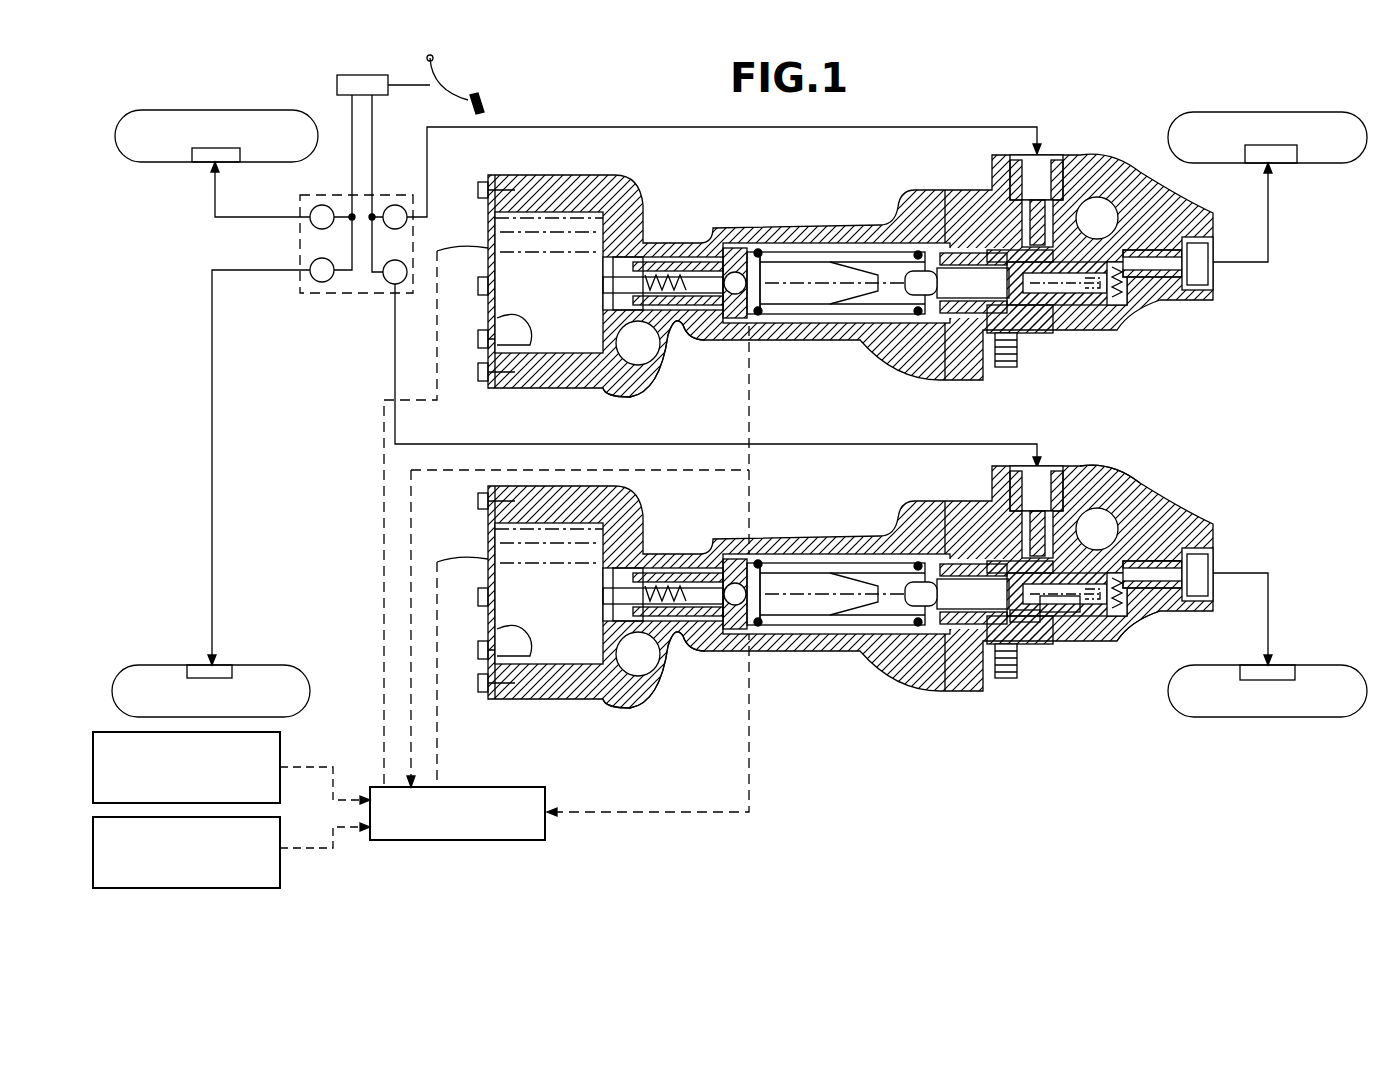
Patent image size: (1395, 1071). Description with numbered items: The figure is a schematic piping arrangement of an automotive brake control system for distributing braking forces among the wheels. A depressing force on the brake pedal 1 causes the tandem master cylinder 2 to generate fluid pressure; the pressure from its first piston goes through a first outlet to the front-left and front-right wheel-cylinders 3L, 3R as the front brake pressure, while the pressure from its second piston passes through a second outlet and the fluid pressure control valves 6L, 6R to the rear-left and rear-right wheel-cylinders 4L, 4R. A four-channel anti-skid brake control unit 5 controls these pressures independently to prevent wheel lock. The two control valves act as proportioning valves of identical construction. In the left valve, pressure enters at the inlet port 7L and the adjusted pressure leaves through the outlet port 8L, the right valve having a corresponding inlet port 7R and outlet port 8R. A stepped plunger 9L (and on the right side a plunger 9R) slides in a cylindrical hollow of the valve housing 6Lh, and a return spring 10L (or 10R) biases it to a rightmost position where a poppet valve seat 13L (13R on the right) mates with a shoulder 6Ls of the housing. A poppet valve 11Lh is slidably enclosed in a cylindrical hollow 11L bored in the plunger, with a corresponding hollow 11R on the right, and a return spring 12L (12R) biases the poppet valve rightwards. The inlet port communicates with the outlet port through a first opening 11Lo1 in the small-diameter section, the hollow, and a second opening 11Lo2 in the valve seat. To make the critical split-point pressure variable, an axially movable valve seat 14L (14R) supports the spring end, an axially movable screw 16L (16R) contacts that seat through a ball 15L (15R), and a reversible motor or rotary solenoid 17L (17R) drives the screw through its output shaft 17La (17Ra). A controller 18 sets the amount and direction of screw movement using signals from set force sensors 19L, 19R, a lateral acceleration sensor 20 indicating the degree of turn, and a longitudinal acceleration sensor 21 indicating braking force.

The brake pedal 1 is at (484, 103).
The tandem master cylinder 2 is at (338, 82).
The front-right wheel-cylinder 3R is at (203, 155).
The front-left wheel-cylinder 3L is at (222, 665).
The rear-right wheel-cylinder 4R is at (1285, 157).
The rear-left wheel-cylinder 4L is at (1275, 683).
The 4-channel anti-skid brake control unit 5 is at (352, 300).
The fluid pressure control valve 6R is at (1118, 160).
The fluid pressure control valve 6L is at (1130, 482).
The valve housing 6Lh is at (1135, 520).
The shoulder 6Ls is at (1135, 645).
The inlet port 7R is at (1040, 162).
The inlet port 7L is at (1040, 488).
The outlet port 8R is at (1200, 283).
The outlet port 8L is at (1190, 592).
The stepped plunger 9R is at (930, 300).
The stepped plunger 9L is at (932, 611).
The return spring 10R is at (850, 318).
The return spring 10L is at (845, 629).
The cylindrical hollow 11R is at (1103, 307).
The cylindrical hollow 11L is at (1100, 618).
The poppet valve 11Lh is at (1078, 625).
The first opening 11Lo1 is at (1030, 640).
The second opening 11Lo2 is at (1165, 563).
The return spring 12R is at (1042, 333).
The return spring 12L is at (1042, 645).
The poppet valve seat 13R is at (1127, 305).
The poppet valve seat 13L is at (1120, 620).
The axially movable valve seat 14R is at (748, 278).
The axially movable valve seat 14L is at (748, 589).
The ball 15R is at (735, 270).
The ball 15L is at (735, 581).
The axially movable screw 16R is at (686, 332).
The axially movable screw 16L is at (686, 643).
The reversible motor or rotary solenoid 17R is at (583, 237).
The reversible motor or rotary solenoid 17L is at (555, 650).
The output shaft 17Ra is at (612, 320).
The output shaft 17La is at (617, 630).
The controller 18 is at (475, 787).
The set force sensor 19R is at (760, 318).
The set force sensor 19L is at (760, 629).
The lateral acceleration sensor 20 is at (280, 735).
The longitudinal acceleration sensor 21 is at (280, 825).